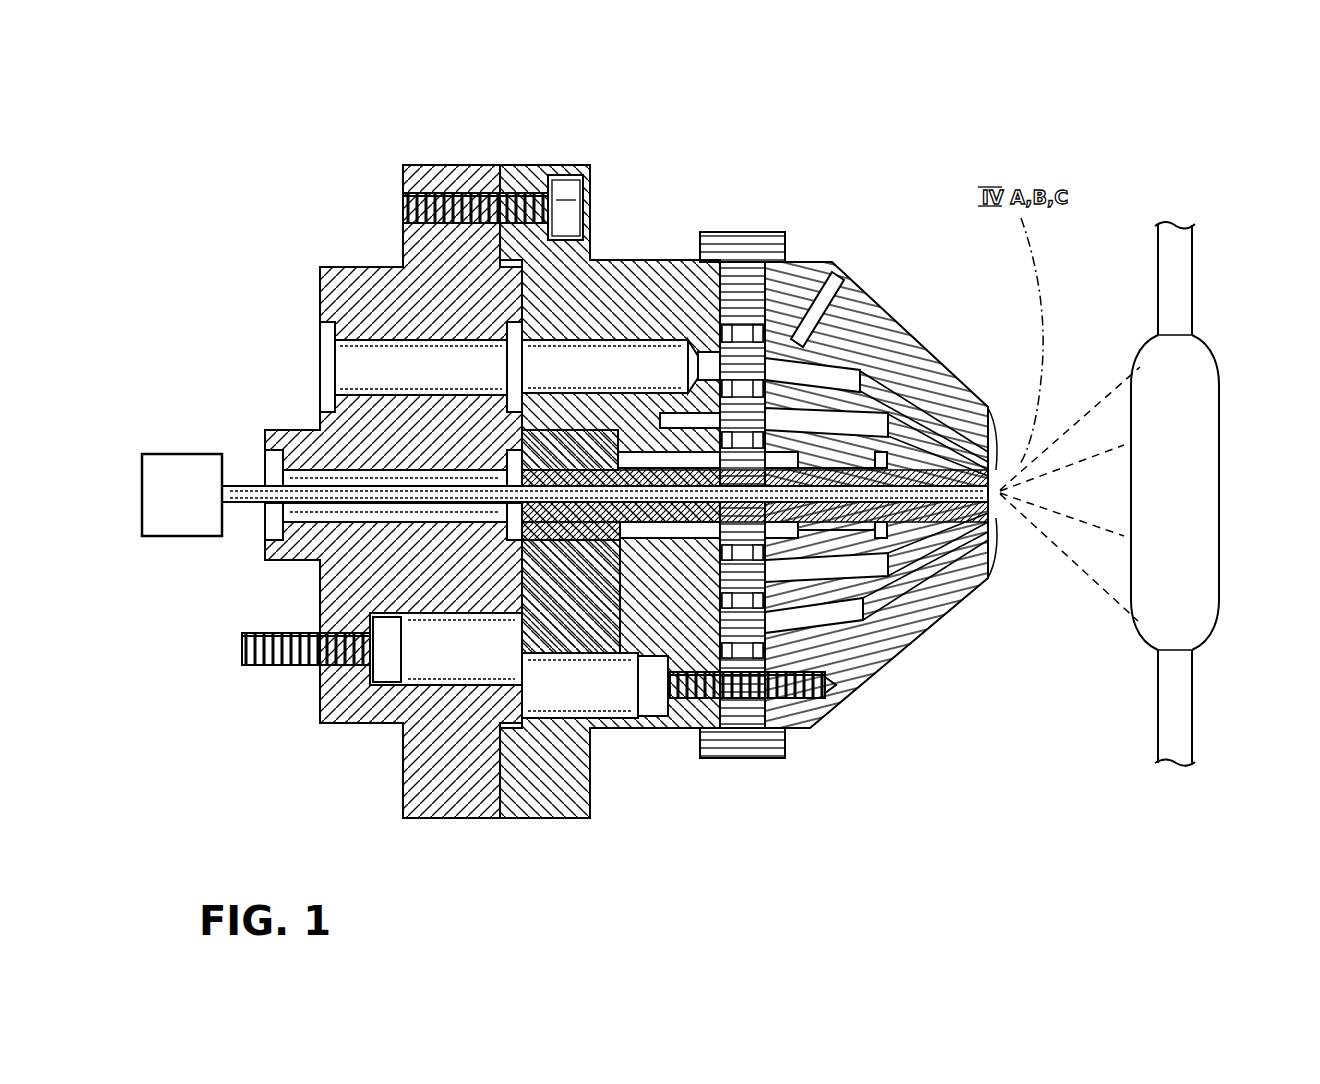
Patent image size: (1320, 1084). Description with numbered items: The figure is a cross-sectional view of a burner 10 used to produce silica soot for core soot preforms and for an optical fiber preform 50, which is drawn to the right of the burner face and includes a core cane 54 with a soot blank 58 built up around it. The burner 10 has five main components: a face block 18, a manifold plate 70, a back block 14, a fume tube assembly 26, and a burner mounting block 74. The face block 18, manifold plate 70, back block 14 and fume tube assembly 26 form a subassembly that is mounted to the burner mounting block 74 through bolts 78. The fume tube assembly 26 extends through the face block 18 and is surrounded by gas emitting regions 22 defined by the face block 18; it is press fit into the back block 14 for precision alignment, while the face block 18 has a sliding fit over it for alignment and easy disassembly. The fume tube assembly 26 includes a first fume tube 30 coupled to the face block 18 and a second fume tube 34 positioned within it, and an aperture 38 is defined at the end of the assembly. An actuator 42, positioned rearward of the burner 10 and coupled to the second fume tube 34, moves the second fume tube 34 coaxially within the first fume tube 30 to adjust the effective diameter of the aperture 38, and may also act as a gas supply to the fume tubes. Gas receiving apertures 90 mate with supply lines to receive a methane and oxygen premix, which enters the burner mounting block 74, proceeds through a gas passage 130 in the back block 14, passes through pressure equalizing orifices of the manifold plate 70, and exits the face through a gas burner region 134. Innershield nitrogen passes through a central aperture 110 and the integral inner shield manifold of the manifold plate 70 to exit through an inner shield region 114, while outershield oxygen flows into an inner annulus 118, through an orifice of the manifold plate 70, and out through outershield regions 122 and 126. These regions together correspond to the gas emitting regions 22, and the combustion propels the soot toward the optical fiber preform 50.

The burner 10 is at (325, 140).
The back block 14 is at (677, 268).
The face block 18 is at (812, 272).
The gas emitting regions 22 is at (1002, 465).
The fume tube assembly 26 is at (903, 473).
The first fume tube 30 is at (545, 537).
The second fume tube 34 is at (252, 506).
The aperture 38 is at (1005, 493).
The actuator 42 is at (186, 478).
The optical fiber preform 50 is at (1208, 246).
The core cane 54 is at (1181, 695).
The soot blank 58 is at (1187, 378).
The manifold plate 70 is at (748, 247).
The burner mounting block 74 is at (362, 276).
The bolts 78 is at (565, 195).
The gas receiving apertures 90 is at (360, 365).
The central aperture 110 is at (655, 458).
The inner shield region 114 is at (1012, 497).
The inner annulus 118 is at (682, 568).
The outershield region 122 is at (1005, 510).
The outershield region 126 is at (998, 520).
The gas passage 130 is at (592, 360).
The gas burner region 134 is at (986, 530).